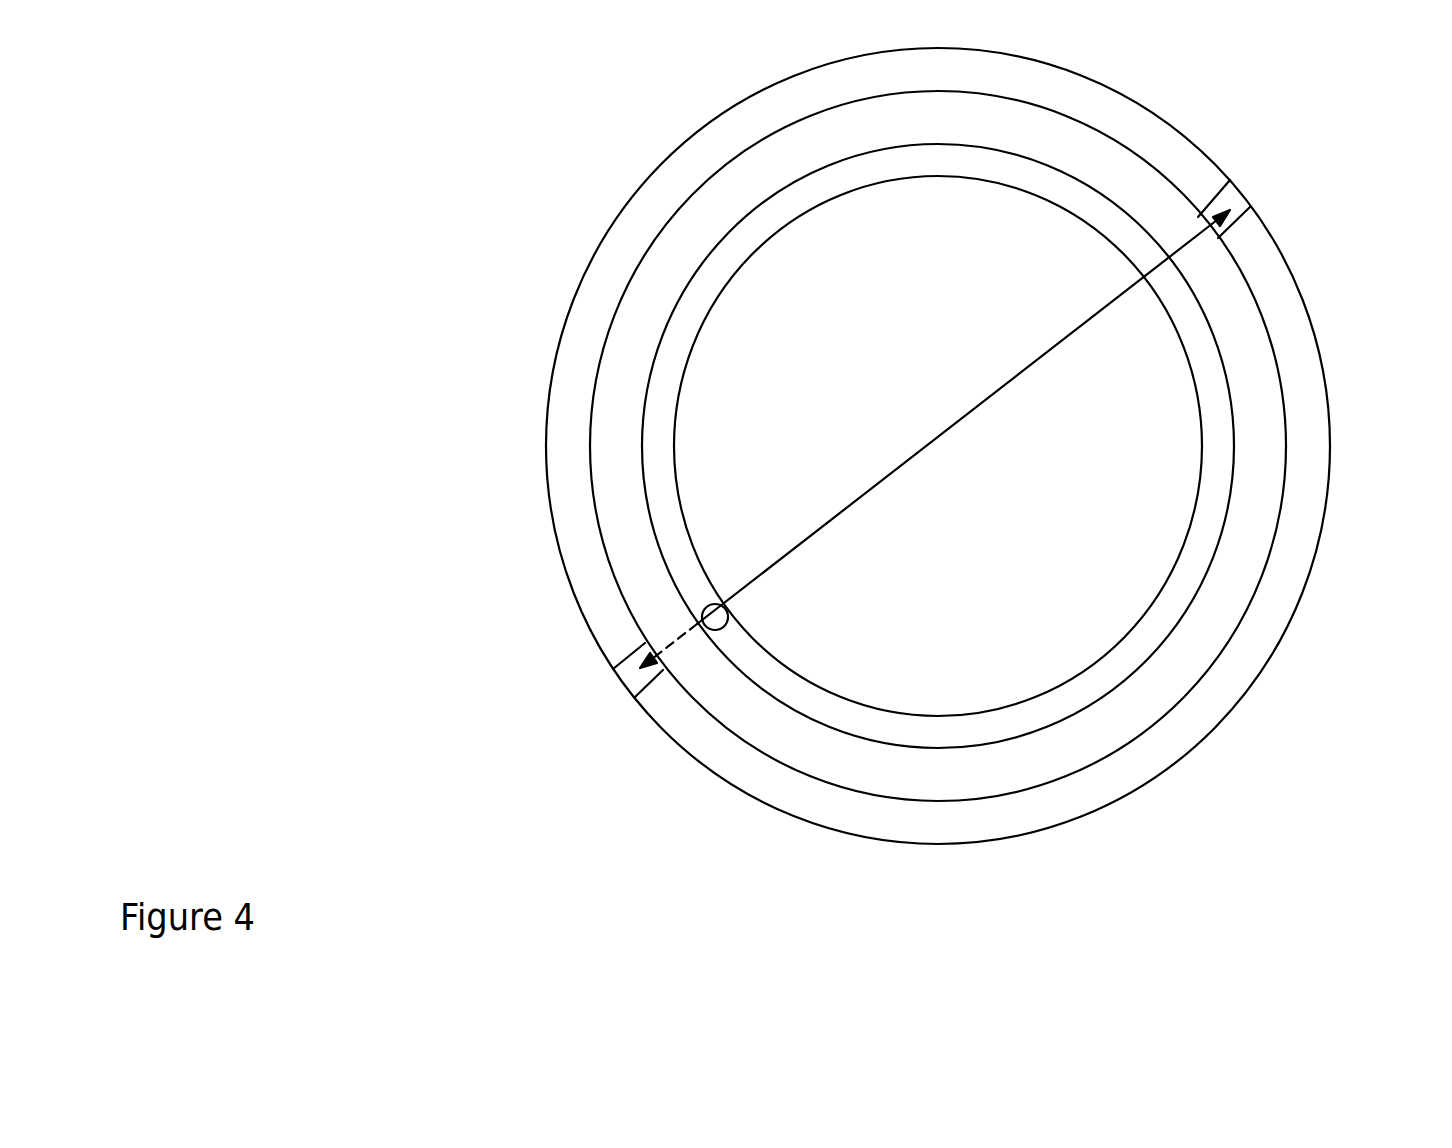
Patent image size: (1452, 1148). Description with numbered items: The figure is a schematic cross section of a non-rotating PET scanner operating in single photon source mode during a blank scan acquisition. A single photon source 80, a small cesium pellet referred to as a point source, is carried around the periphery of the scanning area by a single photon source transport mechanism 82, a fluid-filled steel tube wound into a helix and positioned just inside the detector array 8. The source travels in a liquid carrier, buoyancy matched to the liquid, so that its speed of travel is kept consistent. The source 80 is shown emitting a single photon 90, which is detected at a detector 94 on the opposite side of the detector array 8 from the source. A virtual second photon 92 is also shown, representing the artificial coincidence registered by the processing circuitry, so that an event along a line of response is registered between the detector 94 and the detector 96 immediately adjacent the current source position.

The detector array 8 is at (1333, 443).
The single photon source 80 is at (728, 625).
The single photon source transport mechanism 82 is at (678, 413).
The single photon 90 is at (958, 428).
The virtual second photon 92 is at (678, 642).
The detector 94 is at (1245, 202).
The detector 96 is at (628, 673).